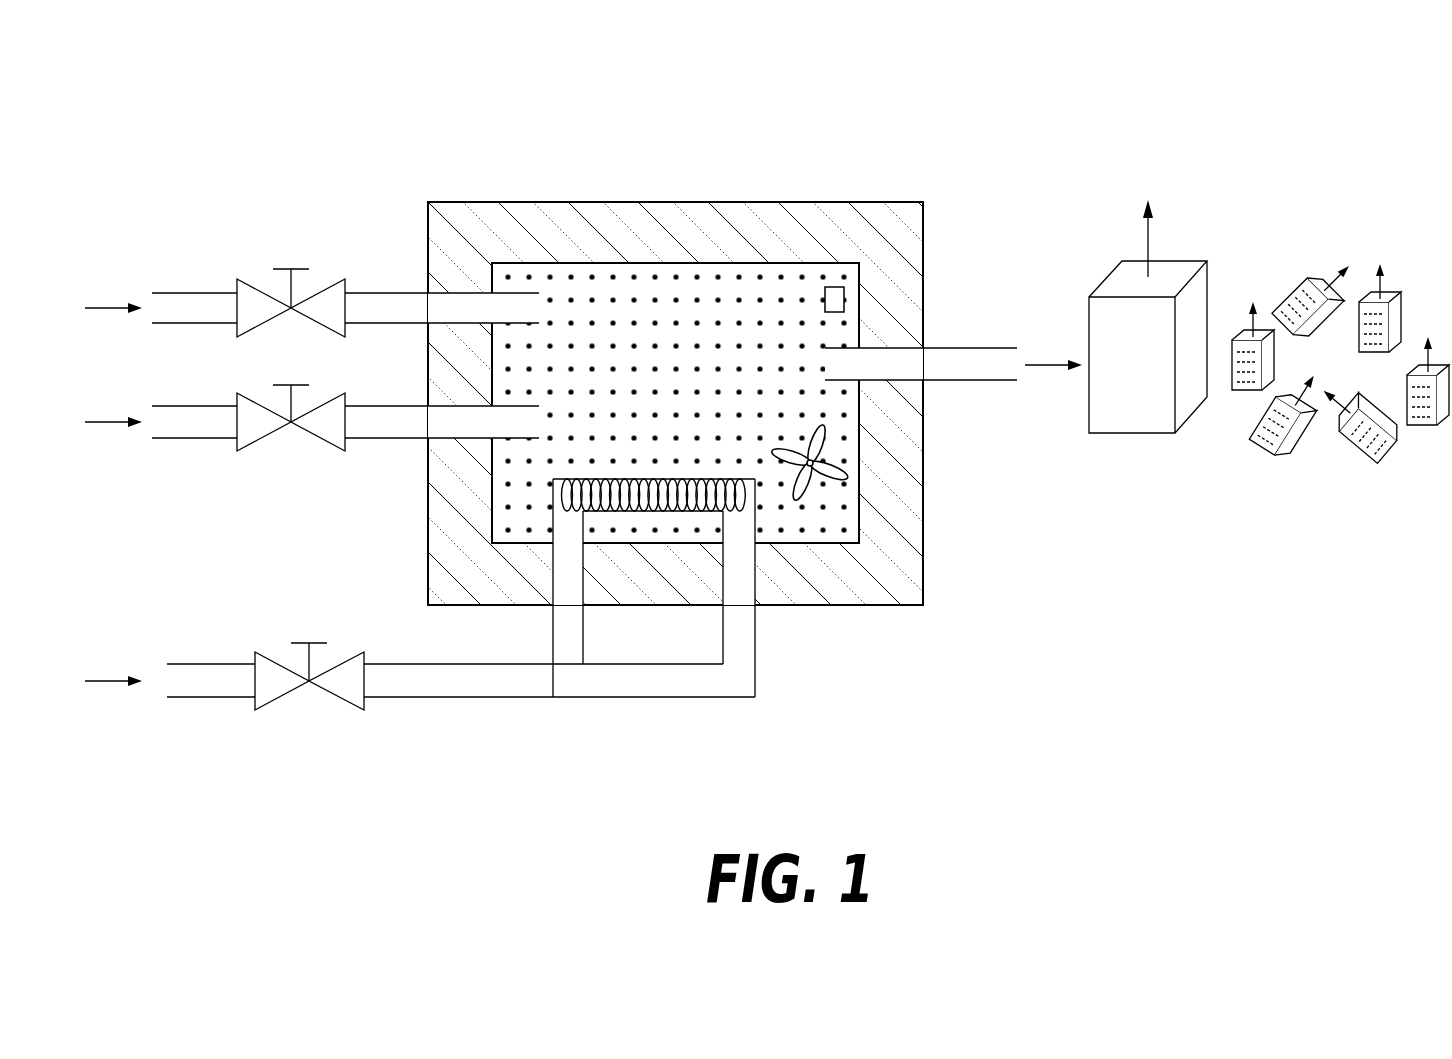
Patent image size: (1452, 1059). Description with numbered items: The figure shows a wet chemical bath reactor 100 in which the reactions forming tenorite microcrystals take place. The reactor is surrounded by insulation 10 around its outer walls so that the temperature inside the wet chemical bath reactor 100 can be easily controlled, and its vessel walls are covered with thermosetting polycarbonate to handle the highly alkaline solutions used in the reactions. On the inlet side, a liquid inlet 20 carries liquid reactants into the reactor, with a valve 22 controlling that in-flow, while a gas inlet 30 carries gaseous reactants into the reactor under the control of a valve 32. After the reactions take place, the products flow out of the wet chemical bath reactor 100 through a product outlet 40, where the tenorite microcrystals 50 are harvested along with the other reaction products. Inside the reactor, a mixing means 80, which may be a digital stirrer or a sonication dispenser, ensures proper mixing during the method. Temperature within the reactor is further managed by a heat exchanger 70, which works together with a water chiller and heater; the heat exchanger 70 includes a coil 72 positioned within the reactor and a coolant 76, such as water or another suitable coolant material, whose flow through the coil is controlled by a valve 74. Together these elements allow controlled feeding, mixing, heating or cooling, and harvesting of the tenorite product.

The wet chemical bath reactor 100 is at (735, 122).
The insulation 10 is at (834, 287).
The liquid inlet 20 is at (100, 308).
The valve 22 is at (291, 269).
The gas inlet 30 is at (100, 422).
The valve 32 is at (291, 422).
The product outlet 40 is at (970, 348).
The tenorite microcrystals 50 is at (1247, 244).
The heat exchanger 70 is at (654, 716).
The coil 72 is at (750, 495).
The valve 74 is at (309, 681).
The coolant 76 is at (100, 681).
The mixing means 80 is at (848, 478).